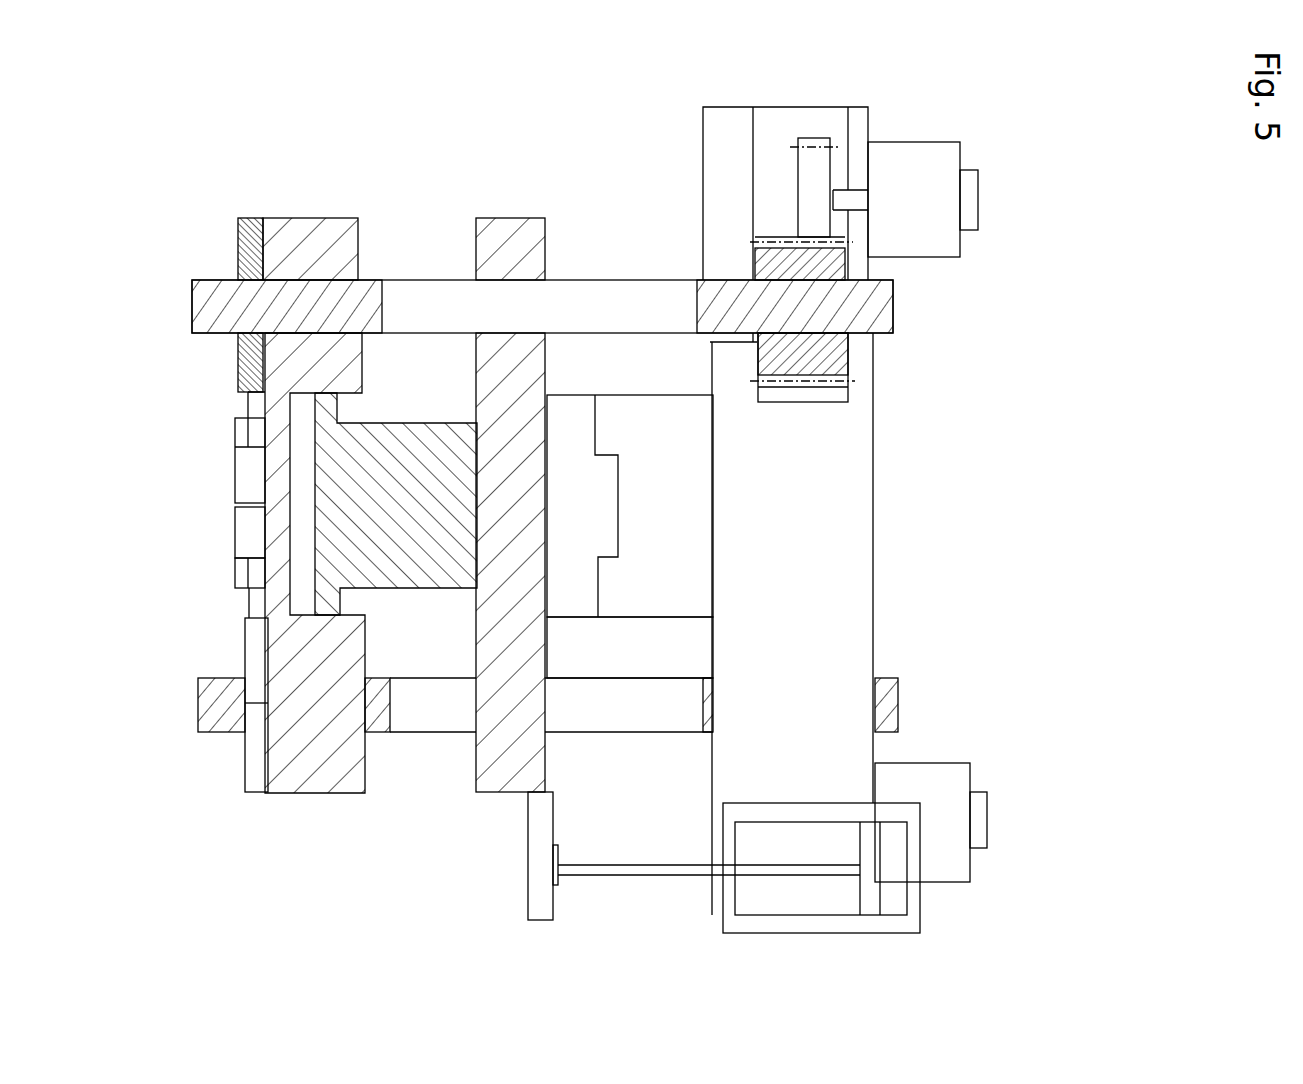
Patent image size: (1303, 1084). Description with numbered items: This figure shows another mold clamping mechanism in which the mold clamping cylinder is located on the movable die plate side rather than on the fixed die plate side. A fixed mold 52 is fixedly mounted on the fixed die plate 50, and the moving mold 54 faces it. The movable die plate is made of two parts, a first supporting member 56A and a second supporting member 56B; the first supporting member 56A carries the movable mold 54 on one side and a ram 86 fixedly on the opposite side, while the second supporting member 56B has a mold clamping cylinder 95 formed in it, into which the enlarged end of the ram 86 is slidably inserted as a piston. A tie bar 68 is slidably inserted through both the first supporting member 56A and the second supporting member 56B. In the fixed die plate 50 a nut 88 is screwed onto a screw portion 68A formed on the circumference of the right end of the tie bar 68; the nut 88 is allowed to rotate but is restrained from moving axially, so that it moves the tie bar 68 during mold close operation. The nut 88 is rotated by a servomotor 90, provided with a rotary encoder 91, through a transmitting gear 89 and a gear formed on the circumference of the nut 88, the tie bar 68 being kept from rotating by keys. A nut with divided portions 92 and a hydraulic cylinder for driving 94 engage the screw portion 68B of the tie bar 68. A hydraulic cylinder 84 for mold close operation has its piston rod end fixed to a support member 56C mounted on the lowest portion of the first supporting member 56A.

The fixed die plate 50 is at (875, 542).
The fixed mold 52 is at (647, 618).
The moving mold 54 is at (568, 618).
The first supporting member 56A is at (507, 782).
The second supporting member 56B is at (312, 795).
The support member 56C is at (537, 895).
The tie bar 68 is at (600, 290).
The screw portion 68A is at (908, 313).
The screw portion 68B is at (202, 272).
The hydraulic cylinder 84 is at (922, 895).
The ram 86 is at (407, 438).
The nut 88 is at (850, 355).
The transmitting gear 89 is at (806, 183).
The servomotor 90 is at (915, 150).
The rotary encoder 91 is at (978, 200).
The nut with divided portions 92 is at (250, 228).
The hydraulic cylinder for driving 94 is at (235, 470).
The mold clamping cylinder 95 is at (305, 512).